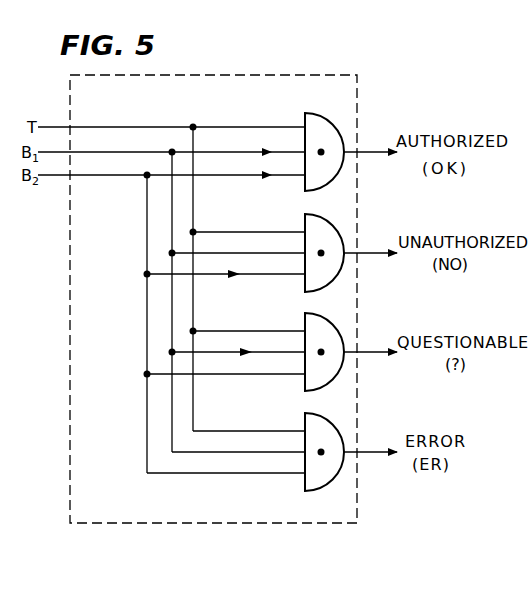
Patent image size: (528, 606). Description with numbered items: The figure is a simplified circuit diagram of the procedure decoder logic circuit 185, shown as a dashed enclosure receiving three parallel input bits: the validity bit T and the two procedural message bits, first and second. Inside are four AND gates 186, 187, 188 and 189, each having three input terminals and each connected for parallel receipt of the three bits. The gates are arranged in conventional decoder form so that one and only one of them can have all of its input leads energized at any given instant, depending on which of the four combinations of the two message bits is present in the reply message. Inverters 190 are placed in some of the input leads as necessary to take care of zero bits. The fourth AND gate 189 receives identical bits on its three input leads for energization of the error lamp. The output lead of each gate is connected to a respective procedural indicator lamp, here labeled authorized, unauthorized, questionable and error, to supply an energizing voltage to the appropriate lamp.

The procedure decoder logic circuit 185 is at (316, 75).
The AND gate 186 is at (325, 125).
The AND gate 187 is at (328, 226).
The AND gate 188 is at (331, 329).
The AND gate 189 is at (331, 429).
The inverters 190 is at (254, 345).